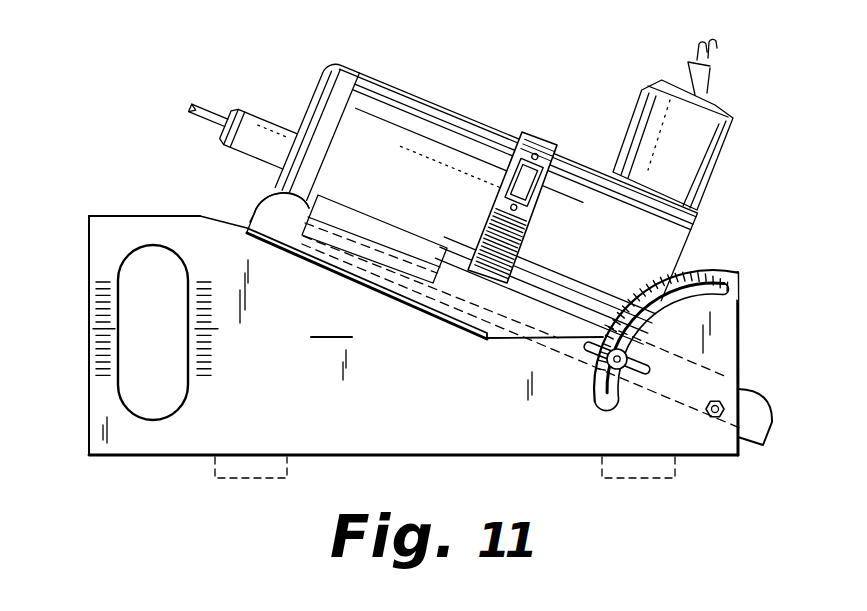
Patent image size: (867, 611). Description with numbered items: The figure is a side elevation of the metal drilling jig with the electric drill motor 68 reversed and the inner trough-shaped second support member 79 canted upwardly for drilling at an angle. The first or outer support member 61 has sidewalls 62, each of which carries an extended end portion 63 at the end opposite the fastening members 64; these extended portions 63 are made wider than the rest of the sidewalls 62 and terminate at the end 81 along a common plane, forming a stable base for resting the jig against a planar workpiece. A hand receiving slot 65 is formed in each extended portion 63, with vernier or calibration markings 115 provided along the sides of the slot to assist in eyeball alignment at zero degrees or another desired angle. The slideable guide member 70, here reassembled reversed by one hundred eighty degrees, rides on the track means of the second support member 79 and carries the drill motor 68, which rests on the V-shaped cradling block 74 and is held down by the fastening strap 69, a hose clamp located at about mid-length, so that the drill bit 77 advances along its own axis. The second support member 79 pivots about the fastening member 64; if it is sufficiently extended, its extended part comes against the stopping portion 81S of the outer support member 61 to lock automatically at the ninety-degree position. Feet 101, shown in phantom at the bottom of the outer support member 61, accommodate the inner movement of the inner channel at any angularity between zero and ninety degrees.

The first or outer support member 61 is at (420, 335).
The sidewalls 62 is at (218, 245).
The extended end portion 63 is at (102, 228).
The fastening members 64 is at (723, 400).
The hand receiving slot 65 is at (167, 395).
The electric drill motor 68 is at (395, 98).
The fastening strap 69 is at (537, 143).
The slideable guide member 70 is at (398, 278).
The electric drill motor cradling block 74 is at (365, 220).
The drill bit 77 is at (205, 109).
The second support member 79 is at (267, 208).
The end 81 is at (90, 356).
The stopping portion 81S is at (740, 460).
The legs or blocks or feet 101 is at (242, 478).
The vernier or calibration markings 115 is at (100, 315).